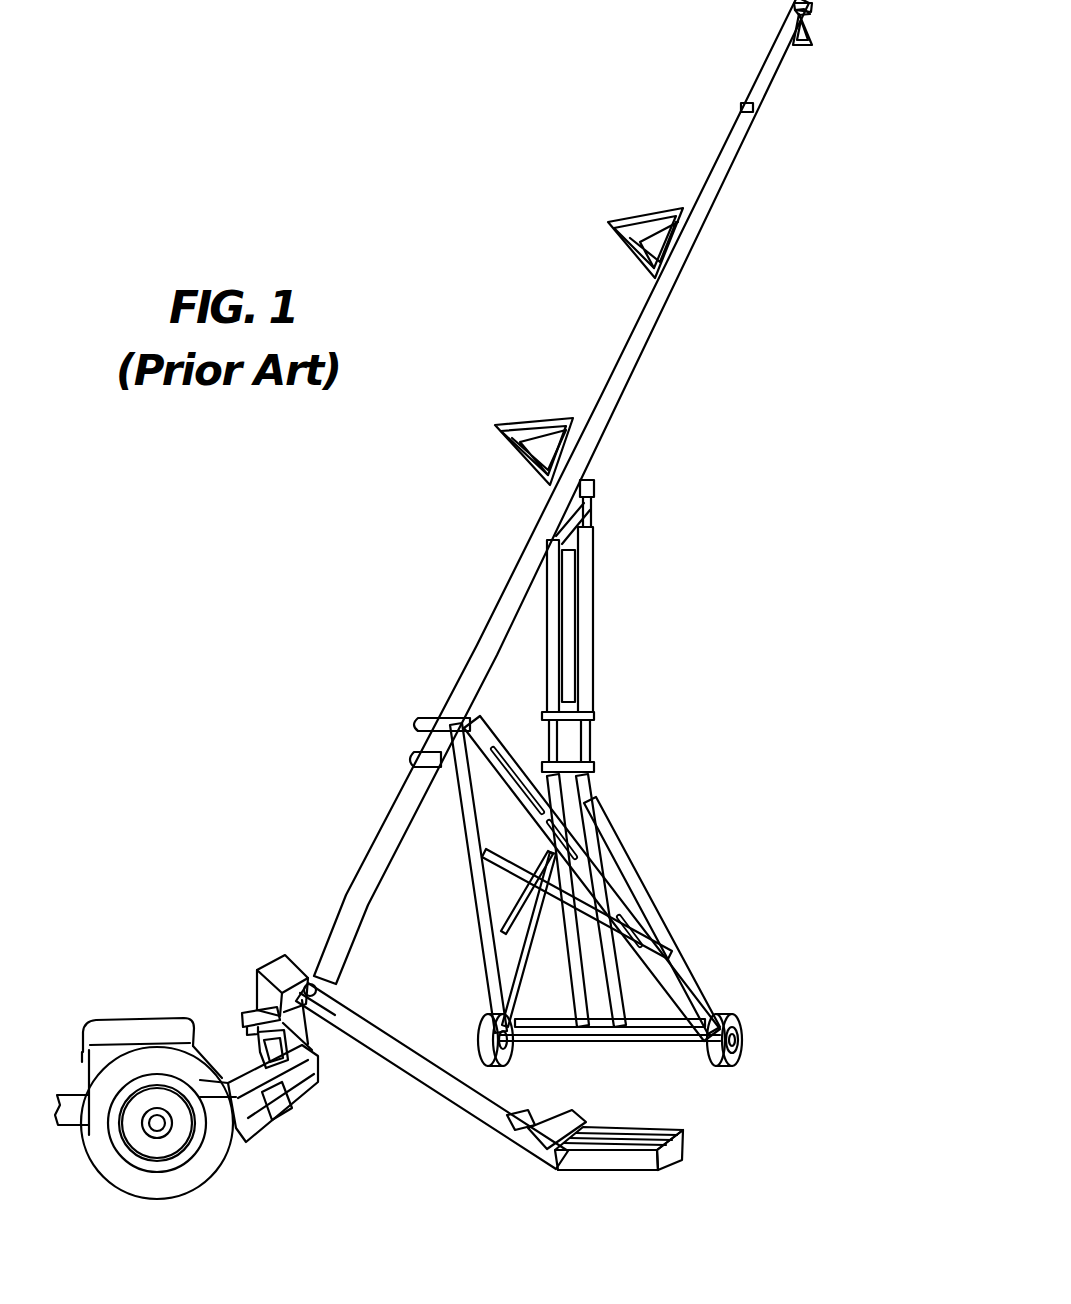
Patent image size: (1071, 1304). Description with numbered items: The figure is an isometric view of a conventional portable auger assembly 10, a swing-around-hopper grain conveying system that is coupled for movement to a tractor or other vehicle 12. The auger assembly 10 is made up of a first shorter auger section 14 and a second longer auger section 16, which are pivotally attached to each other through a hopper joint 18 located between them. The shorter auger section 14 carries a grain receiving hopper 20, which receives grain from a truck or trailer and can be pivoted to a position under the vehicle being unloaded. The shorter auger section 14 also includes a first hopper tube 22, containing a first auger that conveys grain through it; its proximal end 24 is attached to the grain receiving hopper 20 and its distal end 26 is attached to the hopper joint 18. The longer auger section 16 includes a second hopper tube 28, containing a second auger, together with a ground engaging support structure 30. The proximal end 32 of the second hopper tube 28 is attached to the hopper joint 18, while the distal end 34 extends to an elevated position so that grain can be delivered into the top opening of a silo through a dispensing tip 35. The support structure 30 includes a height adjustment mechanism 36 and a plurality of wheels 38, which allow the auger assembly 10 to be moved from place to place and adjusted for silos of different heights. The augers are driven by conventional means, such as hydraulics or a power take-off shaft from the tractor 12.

The auger assembly 10 is at (308, 760).
The tractor 12 is at (130, 1025).
The first shorter auger section 14 is at (442, 1094).
The second longer auger section 16 is at (596, 472).
The hopper joint 18 is at (255, 970).
The grain receiving hopper 20 is at (686, 1141).
The first hopper tube 22 is at (358, 1027).
The proximal end 24 is at (512, 1118).
The distal end 26 is at (318, 988).
The second hopper tube 28 is at (797, 7).
The ground engaging support structure 30 is at (584, 651).
The proximal end 32 is at (318, 960).
The distal end 34 is at (802, 12).
The dispensing tip 35 is at (805, 47).
The height adjustment mechanism 36 is at (594, 770).
The wheels 38 is at (483, 1025).